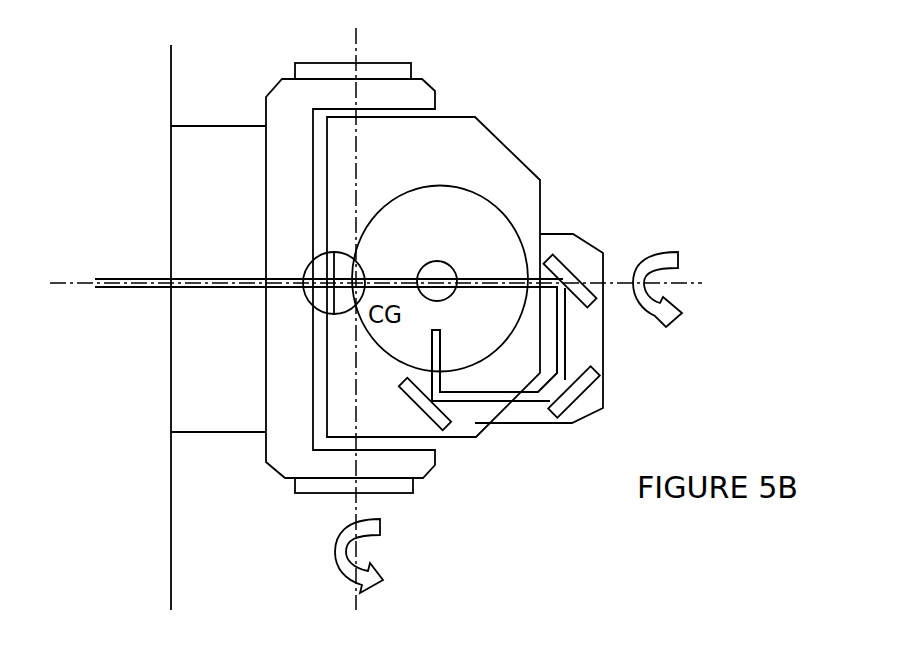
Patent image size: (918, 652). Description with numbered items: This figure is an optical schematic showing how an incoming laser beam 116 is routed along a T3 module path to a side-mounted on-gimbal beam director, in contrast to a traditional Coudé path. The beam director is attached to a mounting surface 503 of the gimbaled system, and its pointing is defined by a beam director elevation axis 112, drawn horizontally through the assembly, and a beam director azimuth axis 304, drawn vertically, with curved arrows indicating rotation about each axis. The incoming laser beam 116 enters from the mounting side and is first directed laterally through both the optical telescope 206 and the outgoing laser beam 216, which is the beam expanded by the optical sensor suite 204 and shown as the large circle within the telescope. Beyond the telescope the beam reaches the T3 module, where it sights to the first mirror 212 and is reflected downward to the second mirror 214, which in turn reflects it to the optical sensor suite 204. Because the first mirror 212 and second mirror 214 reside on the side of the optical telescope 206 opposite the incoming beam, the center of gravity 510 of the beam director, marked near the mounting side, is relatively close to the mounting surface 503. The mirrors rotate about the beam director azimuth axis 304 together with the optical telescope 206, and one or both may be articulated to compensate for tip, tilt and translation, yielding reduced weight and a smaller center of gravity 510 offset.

The mounting surface 503 is at (171, 92).
The beam director azimuth axis 304 is at (358, 50).
The beam director elevation axis 112 is at (57, 281).
The incoming laser beam 116 is at (245, 278).
The optical telescope 206 is at (488, 170).
The outgoing laser beam 216 is at (443, 217).
The center of gravity 510 is at (365, 270).
The first mirror 212 is at (570, 268).
The second mirror 214 is at (578, 407).
The optical sensor suite 204 is at (460, 417).